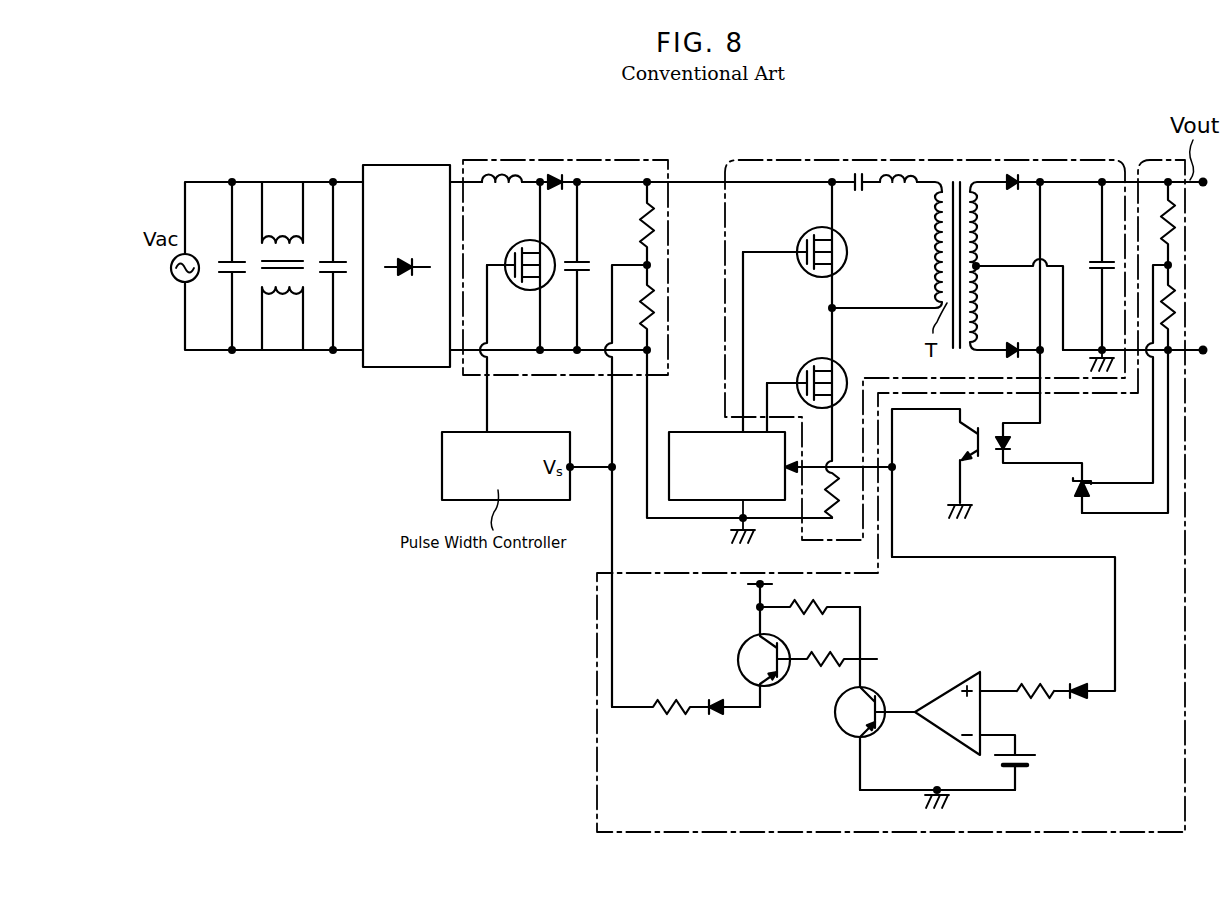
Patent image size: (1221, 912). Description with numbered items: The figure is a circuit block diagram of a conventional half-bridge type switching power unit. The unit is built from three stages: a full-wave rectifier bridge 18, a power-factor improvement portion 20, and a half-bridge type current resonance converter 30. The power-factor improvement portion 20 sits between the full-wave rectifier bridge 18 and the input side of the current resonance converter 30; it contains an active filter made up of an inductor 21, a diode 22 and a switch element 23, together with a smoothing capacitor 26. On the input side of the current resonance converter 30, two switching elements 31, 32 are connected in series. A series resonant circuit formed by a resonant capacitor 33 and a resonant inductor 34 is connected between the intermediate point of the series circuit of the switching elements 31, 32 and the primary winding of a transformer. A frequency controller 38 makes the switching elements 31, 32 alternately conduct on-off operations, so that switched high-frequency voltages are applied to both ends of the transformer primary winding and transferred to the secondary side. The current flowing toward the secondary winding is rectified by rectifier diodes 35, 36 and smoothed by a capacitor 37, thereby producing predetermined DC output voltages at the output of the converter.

The full-wave rectifier bridge 18 is at (410, 160).
The power-factor improvement portion 20 is at (463, 158).
The inductor 21 is at (500, 189).
The diode 22 is at (556, 189).
The switch element 23 is at (512, 289).
The smoothing capacitor 26 is at (583, 272).
The half-bridge type current resonance converter 30 is at (1125, 158).
The switching element 31 is at (847, 254).
The switching element 32 is at (845, 375).
The resonant capacitor 33 is at (858, 190).
The resonant inductor 34 is at (910, 190).
The rectifier diode 35 is at (1012, 190).
The rectifier diode 36 is at (1013, 343).
The capacitor 37 is at (1093, 258).
The frequency controller 38 is at (695, 498).